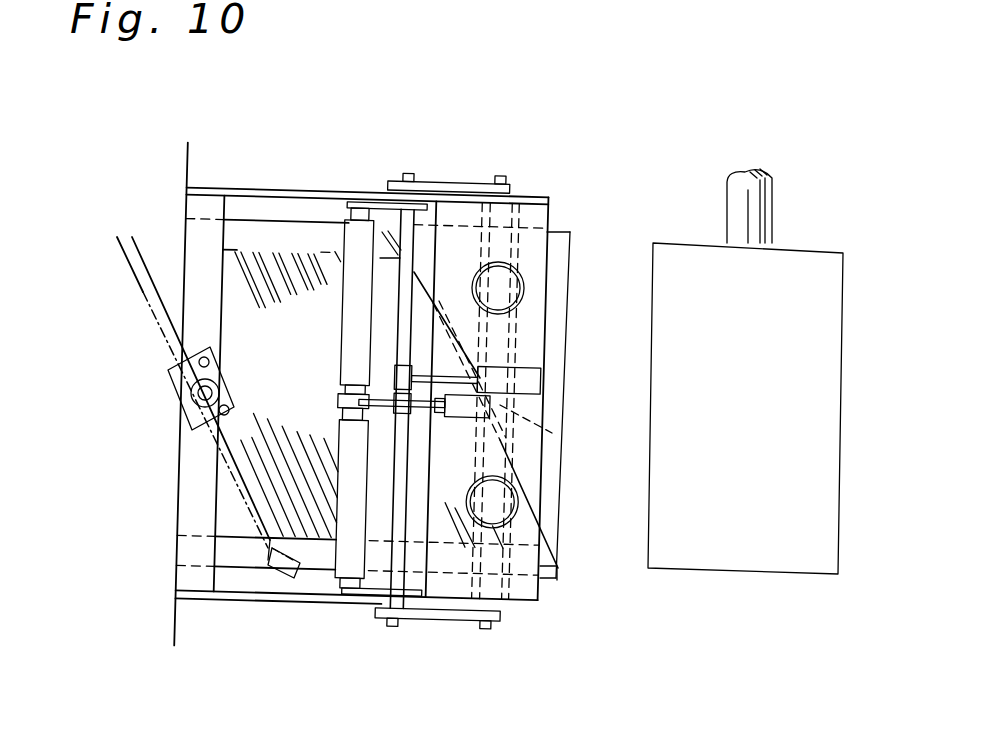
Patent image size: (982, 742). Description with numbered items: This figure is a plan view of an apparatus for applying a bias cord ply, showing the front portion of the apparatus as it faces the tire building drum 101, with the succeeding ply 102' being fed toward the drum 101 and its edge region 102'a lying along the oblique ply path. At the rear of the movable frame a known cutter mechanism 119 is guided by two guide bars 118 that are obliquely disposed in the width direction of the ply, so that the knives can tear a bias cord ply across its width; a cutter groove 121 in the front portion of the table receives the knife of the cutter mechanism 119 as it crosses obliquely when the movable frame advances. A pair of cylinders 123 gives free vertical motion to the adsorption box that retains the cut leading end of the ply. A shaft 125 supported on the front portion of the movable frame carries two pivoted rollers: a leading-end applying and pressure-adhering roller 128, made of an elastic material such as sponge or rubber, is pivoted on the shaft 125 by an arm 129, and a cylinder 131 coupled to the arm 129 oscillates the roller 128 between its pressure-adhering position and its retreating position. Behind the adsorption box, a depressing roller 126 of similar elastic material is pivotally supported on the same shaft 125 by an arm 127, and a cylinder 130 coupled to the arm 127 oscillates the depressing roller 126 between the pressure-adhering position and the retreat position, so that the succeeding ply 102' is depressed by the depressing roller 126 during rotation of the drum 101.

The tire building drum 101 is at (812, 265).
The succeeding ply 102' is at (486, 498).
The plate edge 102'a is at (586, 462).
The guide bar 118 is at (267, 587).
The cutter mechanism 119 is at (190, 415).
The cutter groove 121 is at (553, 568).
The cylinder 123 is at (525, 272).
The shaft 125 is at (407, 233).
The depressing roller 126 is at (352, 318).
The arm 127 is at (350, 425).
The leading-end applying and pressure-adhering roller 128 is at (552, 433).
The arm 129 is at (410, 362).
The cylinder 130 is at (456, 418).
The cylinder 131 is at (523, 380).